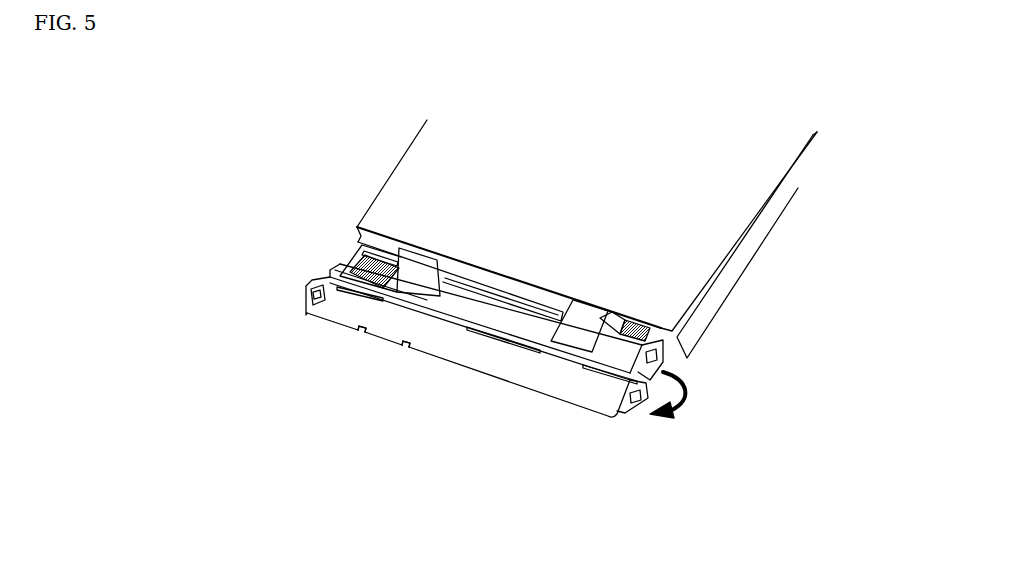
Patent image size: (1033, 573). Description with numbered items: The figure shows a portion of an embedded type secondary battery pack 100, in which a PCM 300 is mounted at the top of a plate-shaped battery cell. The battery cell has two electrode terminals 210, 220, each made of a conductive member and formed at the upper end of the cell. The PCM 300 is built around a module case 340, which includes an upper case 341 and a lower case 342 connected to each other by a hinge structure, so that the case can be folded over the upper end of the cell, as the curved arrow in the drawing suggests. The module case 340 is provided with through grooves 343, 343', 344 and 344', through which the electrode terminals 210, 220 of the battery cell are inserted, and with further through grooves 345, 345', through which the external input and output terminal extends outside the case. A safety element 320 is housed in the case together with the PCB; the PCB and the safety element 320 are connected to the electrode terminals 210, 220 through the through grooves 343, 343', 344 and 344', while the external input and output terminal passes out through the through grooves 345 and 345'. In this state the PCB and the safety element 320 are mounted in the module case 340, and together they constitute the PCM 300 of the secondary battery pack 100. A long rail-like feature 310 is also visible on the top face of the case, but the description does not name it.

The secondary battery pack 100 is at (49, 108).
The electrode terminal 210 is at (428, 266).
The electrode terminal 220 is at (612, 306).
The PCM 300 is at (277, 311).
The hinge rail 310 is at (470, 304).
The safety element 320 is at (357, 246).
The module case 340 is at (348, 316).
The upper case 341 is at (445, 341).
The lower case 342 is at (356, 260).
The through groove 343 is at (359, 232).
The through groove 343' is at (383, 400).
The through groove 344 is at (575, 270).
The through groove 344' is at (484, 436).
The through groove 345 is at (631, 295).
The through groove 345' is at (611, 462).